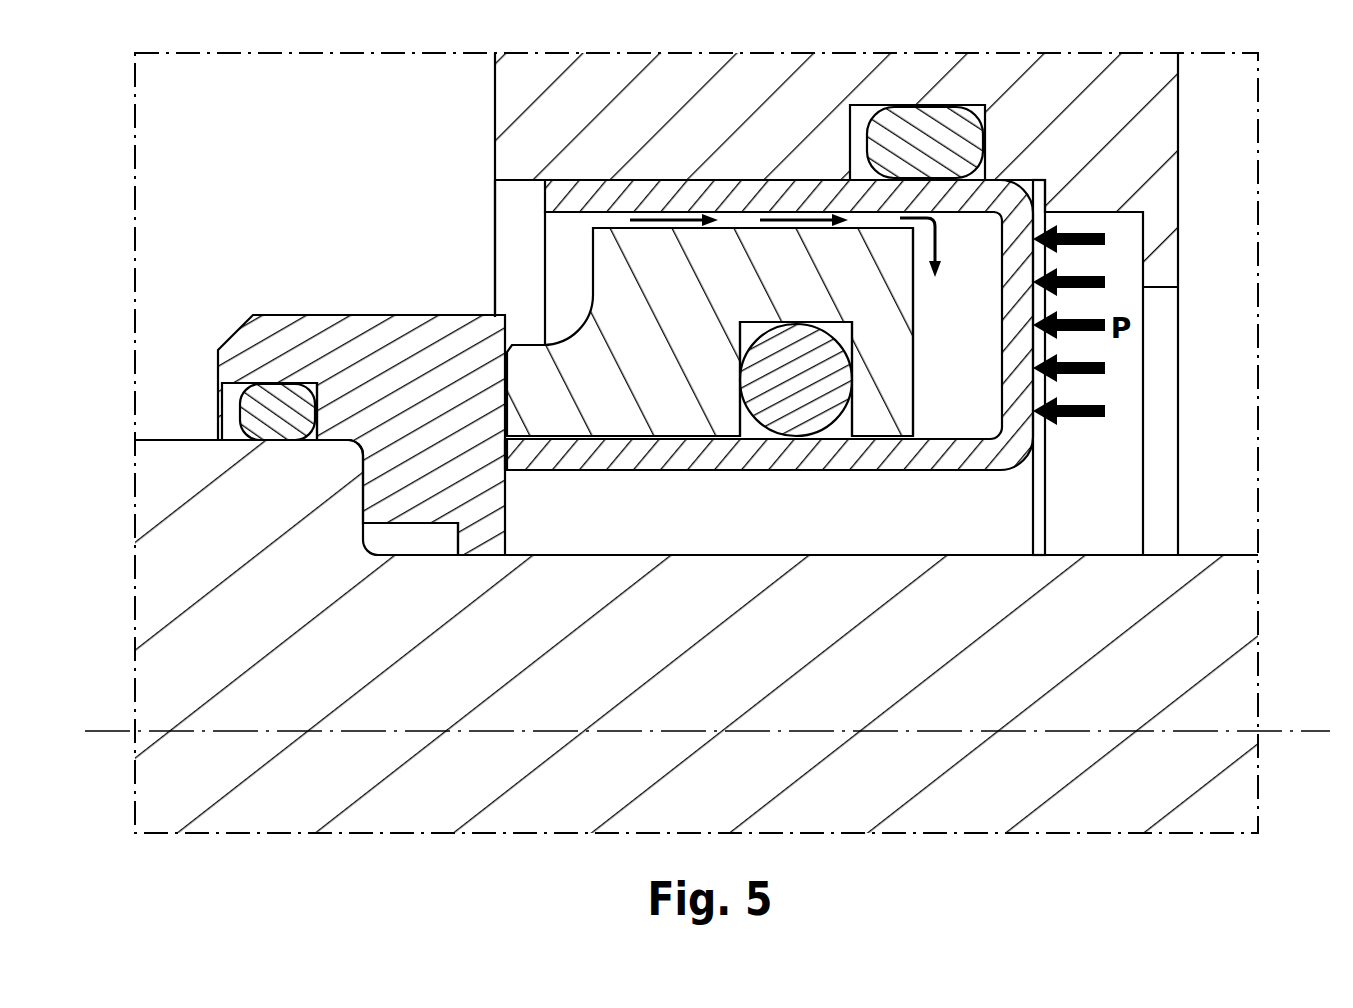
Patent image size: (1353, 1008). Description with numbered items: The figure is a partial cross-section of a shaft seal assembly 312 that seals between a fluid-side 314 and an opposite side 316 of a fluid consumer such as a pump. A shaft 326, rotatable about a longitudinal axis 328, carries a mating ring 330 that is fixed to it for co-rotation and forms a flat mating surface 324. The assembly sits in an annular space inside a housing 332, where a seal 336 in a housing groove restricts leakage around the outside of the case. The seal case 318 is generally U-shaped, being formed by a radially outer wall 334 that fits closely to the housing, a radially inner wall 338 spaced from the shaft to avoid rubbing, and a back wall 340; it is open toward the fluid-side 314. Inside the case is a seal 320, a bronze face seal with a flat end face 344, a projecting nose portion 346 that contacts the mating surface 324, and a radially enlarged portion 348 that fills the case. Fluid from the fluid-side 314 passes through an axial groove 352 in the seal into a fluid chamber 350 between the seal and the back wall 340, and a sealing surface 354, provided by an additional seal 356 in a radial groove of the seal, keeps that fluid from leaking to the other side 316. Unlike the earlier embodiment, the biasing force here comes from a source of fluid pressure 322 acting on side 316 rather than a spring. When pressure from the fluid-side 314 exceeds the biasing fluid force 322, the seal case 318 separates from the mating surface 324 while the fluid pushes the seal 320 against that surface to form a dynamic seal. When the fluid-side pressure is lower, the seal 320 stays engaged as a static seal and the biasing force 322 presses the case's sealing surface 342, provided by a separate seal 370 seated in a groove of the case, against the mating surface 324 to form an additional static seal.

The shaft seal assembly 312 is at (520, 226).
The fluid-side 314 is at (230, 152).
The side other than the fluid-side 316 is at (1020, 510).
The seal case 318 is at (719, 175).
The seal 320 is at (572, 359).
The source of fluid pressure 322 is at (1115, 291).
The mating surface 324 is at (507, 384).
The shaft 326 is at (450, 600).
The longitudinal axis 328 is at (308, 731).
The mating ring 330 is at (340, 407).
The housing 332 is at (1160, 258).
The radially outer wall 334 is at (690, 190).
The seal 336 is at (948, 150).
The radially inner wall 338 is at (627, 463).
The back wall 340 is at (1017, 405).
The sealing surface 342 is at (507, 452).
The flat end face 344 is at (335, 422).
The projecting nose portion 346 is at (545, 405).
The radially enlarged portion 348 is at (877, 417).
The fluid chamber 350 is at (957, 231).
The axial groove 352 is at (620, 217).
The sealing surface 354 is at (795, 438).
The additional seal 356 is at (793, 322).
The separate seal 370 is at (475, 503).